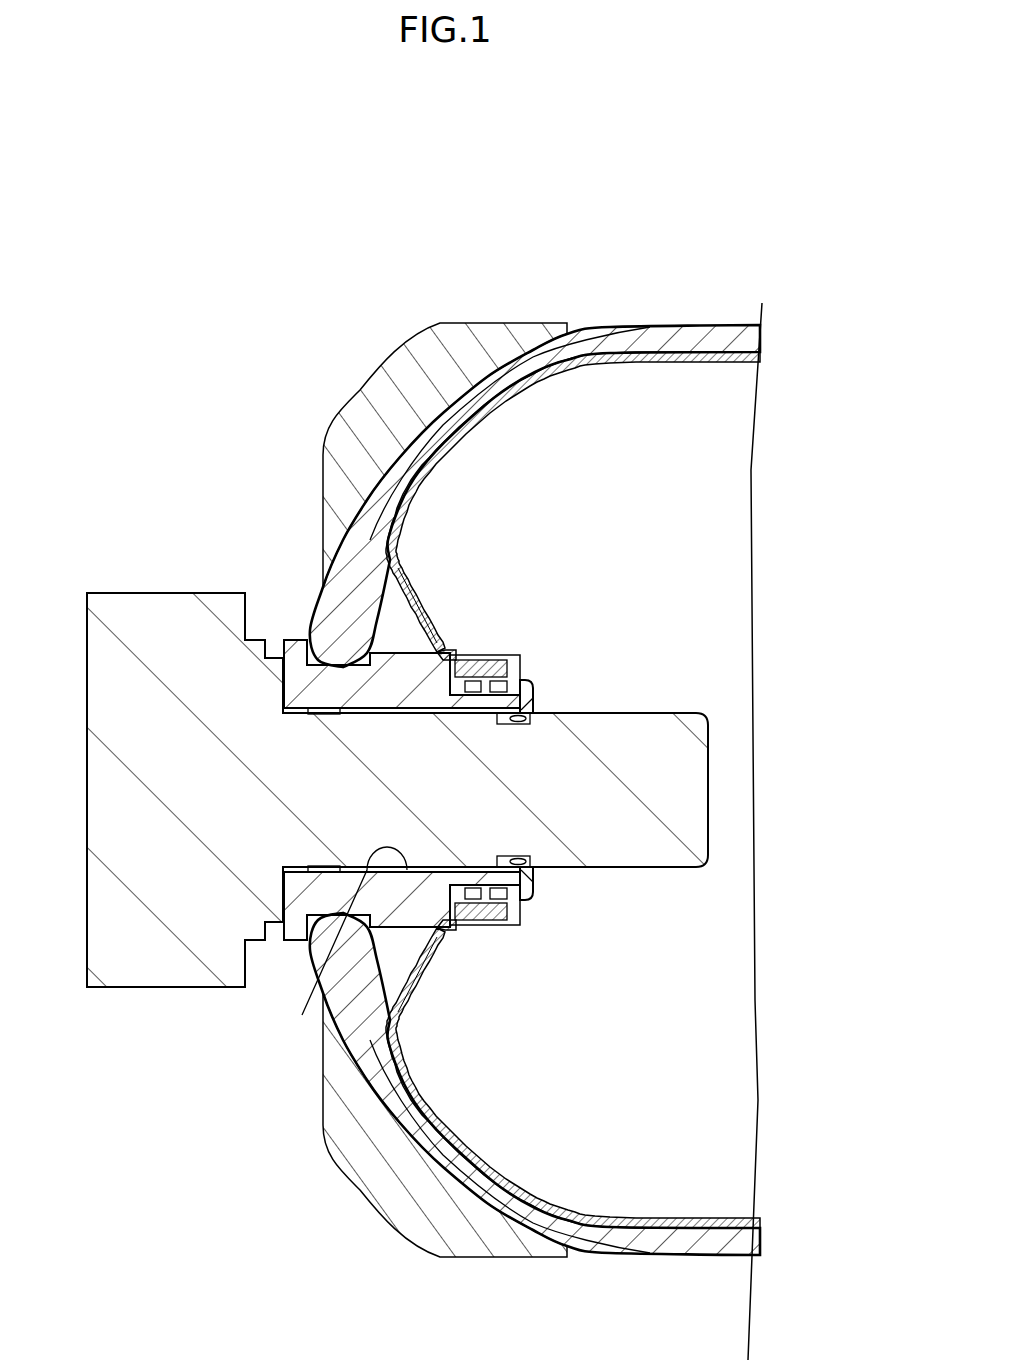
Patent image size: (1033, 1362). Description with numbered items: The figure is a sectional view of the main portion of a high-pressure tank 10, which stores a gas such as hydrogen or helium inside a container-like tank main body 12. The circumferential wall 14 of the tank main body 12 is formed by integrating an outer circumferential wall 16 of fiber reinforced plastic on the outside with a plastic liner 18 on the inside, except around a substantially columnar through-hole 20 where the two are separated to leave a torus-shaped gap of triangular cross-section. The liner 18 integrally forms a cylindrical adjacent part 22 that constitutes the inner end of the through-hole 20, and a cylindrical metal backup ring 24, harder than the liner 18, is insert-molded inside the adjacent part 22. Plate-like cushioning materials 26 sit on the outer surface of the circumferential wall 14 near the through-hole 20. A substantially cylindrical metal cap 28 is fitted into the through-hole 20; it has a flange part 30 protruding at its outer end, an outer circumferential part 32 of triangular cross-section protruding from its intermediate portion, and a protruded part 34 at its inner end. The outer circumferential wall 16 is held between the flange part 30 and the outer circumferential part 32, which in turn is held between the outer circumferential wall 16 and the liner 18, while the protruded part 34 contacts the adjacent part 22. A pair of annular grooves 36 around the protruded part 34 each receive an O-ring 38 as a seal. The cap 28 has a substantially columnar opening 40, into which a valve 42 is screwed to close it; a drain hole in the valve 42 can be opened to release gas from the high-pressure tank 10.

The high-pressure tank 10 is at (184, 392).
The tank main body 12 is at (612, 322).
The circumferential wall 14 is at (535, 790).
The outer circumferential wall 16 is at (586, 345).
The liner 18 is at (562, 368).
The through-hole 20 is at (300, 640).
The adjacent part 22 is at (522, 656).
The backup ring 24 is at (482, 660).
The cushioning materials 26 is at (350, 400).
The cap 28 is at (429, 584).
The flange part 30 is at (282, 942).
The outer circumferential part 32 is at (425, 996).
The protruded part 34 is at (522, 924).
The annular grooves 36 is at (474, 899).
The O-ring 38 is at (473, 681).
The opening 40 is at (275, 1054).
The valve 42 is at (163, 592).